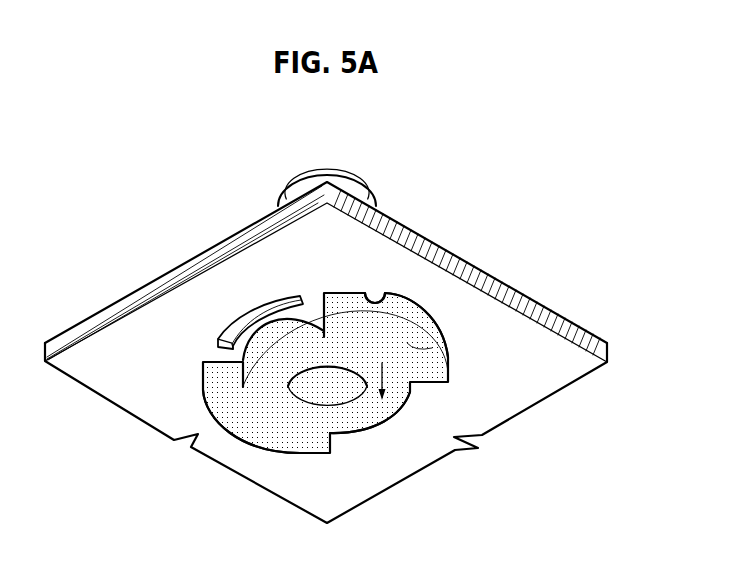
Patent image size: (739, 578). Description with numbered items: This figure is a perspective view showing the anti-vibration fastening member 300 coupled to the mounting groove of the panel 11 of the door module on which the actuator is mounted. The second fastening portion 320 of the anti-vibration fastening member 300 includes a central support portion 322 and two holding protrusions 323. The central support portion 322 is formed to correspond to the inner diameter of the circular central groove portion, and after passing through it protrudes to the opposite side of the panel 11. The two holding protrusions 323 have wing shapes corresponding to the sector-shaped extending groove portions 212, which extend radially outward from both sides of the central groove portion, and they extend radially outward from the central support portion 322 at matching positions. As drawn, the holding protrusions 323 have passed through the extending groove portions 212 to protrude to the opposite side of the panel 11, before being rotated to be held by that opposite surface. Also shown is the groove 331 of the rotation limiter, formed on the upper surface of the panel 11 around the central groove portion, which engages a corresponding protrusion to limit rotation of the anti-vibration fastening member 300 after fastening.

The panel 11 is at (85, 368).
The anti-vibration fastening member 300 is at (289, 165).
The second fastening portion 320 is at (281, 460).
The central support portion 322 is at (378, 418).
The holding protrusions 323 is at (443, 345).
The extending groove portions 212 is at (385, 303).
The groove 331 is at (226, 330).